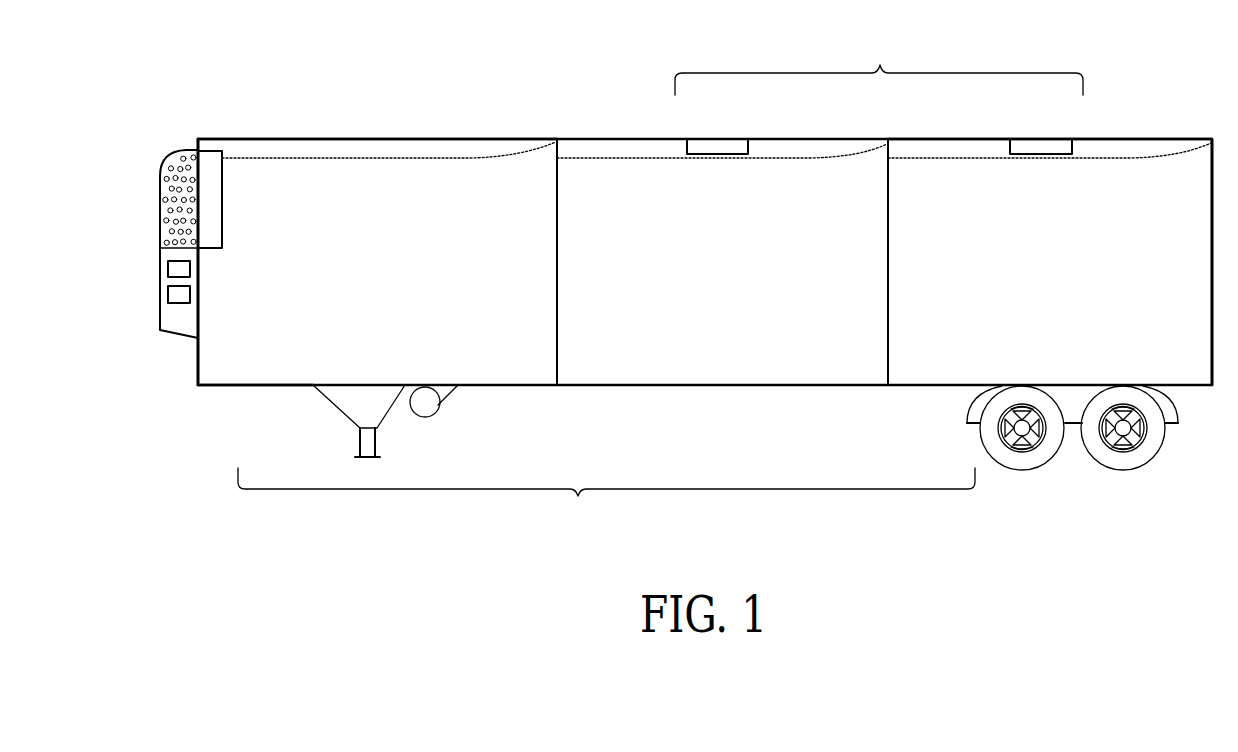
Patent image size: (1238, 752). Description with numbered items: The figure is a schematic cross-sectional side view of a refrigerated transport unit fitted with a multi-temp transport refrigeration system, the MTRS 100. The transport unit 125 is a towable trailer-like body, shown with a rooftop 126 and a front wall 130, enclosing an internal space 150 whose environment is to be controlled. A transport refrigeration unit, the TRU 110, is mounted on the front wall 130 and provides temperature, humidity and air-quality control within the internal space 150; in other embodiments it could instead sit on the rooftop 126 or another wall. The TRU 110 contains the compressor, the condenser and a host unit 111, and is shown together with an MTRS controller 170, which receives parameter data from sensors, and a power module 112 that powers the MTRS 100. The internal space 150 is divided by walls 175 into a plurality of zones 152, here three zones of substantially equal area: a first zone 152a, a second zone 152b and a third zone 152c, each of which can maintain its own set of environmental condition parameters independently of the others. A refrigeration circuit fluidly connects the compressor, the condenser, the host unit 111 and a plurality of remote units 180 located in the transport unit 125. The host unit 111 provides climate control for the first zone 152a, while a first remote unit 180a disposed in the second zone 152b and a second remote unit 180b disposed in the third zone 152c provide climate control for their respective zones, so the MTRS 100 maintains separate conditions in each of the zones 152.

The multi-temp transport refrigeration system (MTRS) 100 is at (452, 62).
The host unit 111 is at (152, 160).
The MTRS controller 170 is at (168, 269).
The power module 112 is at (168, 294).
The transport refrigeration unit (TRU) 110 is at (160, 329).
The front wall 130 is at (198, 365).
The internal space 150 is at (227, 340).
The first zone 152a is at (276, 340).
The second zone 152b is at (680, 340).
The third zone 152c is at (942, 340).
The zones 152 is at (606, 500).
The walls 175 is at (559, 340).
The rooftop 126 is at (342, 138).
The transport unit (TU) 125 is at (1170, 139).
The remote units 180 is at (879, 95).
The first remote unit 180a is at (716, 148).
The second remote unit 180b is at (1040, 148).